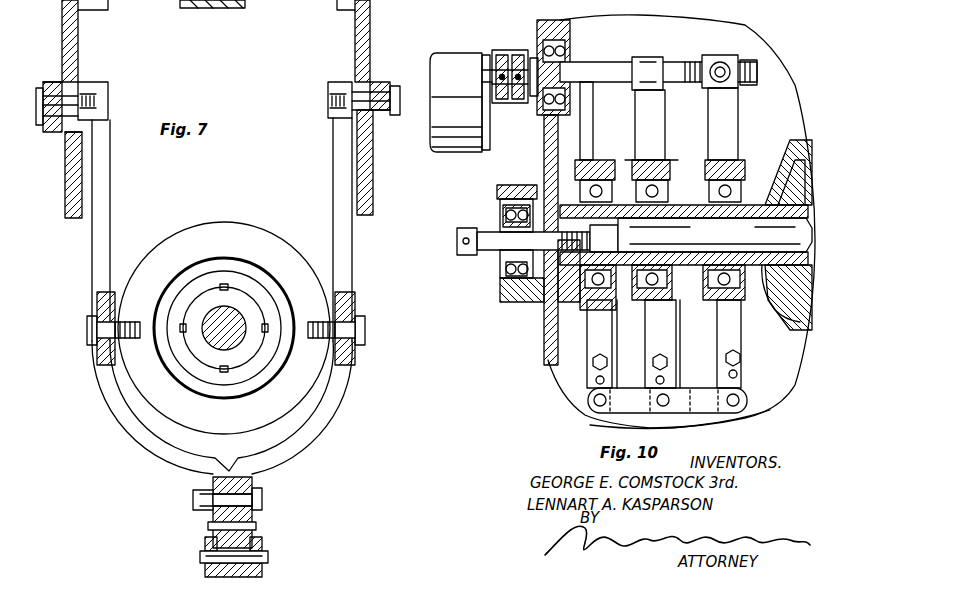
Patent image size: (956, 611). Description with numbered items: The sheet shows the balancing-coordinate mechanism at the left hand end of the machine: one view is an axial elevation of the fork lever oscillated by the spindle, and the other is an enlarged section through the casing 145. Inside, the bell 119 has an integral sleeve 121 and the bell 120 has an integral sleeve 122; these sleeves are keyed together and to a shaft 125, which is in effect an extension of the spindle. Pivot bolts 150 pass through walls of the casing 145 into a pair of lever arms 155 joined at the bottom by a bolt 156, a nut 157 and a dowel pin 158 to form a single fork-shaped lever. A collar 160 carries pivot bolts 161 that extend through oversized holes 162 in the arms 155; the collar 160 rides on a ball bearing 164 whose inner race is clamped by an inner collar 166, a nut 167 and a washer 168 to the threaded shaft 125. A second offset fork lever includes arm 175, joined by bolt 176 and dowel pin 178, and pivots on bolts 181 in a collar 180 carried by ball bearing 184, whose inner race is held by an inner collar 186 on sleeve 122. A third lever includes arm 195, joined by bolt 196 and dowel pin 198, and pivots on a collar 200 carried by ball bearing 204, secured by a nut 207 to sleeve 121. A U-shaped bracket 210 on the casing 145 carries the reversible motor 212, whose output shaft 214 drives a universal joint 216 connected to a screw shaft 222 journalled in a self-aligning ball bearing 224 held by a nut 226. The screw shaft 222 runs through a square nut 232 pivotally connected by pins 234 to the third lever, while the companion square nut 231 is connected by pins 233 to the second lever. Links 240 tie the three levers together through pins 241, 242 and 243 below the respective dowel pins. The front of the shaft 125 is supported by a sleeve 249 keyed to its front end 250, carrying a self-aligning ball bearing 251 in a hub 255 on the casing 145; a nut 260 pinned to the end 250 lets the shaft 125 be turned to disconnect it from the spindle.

In FIG. 10, the bell 119 is at (800, 332).
In FIG. 10, the bell 120 is at (800, 176).
In FIG. 10, the sleeve 121 is at (770, 302).
In FIG. 10, the sleeve 122 is at (711, 344).
In FIG. 7, the shaft 125 is at (232, 340).
In FIG. 10, the shaft 125 is at (644, 235).
In FIG. 7, the casing 145 is at (70, 178).
In FIG. 10, the casing 145 is at (710, 30).
In FIG. 7, the pivot bolts 150 is at (58, 95).
In FIG. 10, the pivot bolts 150 is at (588, 66).
In FIG. 7, the lever arms 155 is at (108, 210).
In FIG. 10, the lever arms 155 is at (556, 404).
In FIG. 7, the bolt 156 is at (262, 498).
In FIG. 10, the bolt 156 is at (600, 354).
In FIG. 7, the nut 157 is at (195, 500).
In FIG. 7, the dowel pin 158 is at (256, 527).
In FIG. 10, the dowel pin 158 is at (582, 402).
In FIG. 7, the collar 160 is at (216, 236).
In FIG. 10, the collar 160 is at (556, 346).
In FIG. 7, the pivot bolts 161 is at (100, 336).
In FIG. 7, the oversized holes 162 is at (96, 306).
In FIG. 10, the ball bearing 164 is at (546, 330).
In FIG. 10, the inner collar 166 is at (556, 300).
In FIG. 7, the nut 167 is at (245, 302).
In FIG. 10, the nut 167 is at (522, 292).
In FIG. 7, the washer 168 is at (193, 363).
In FIG. 10, the washer 168 is at (548, 200).
In FIG. 10, the lever arm 175 is at (648, 344).
In FIG. 10, the bolt 176 is at (653, 363).
In FIG. 10, the dowel pin 178 is at (656, 381).
In FIG. 10, the collar 180 is at (655, 170).
In FIG. 10, the pivot bolts 181 is at (662, 297).
In FIG. 10, the ball bearing 184 is at (633, 162).
In FIG. 10, the inner collar 186 is at (644, 200).
In FIG. 10, the lever arm 195 is at (726, 349).
In FIG. 10, the bolt 196 is at (741, 365).
In FIG. 10, the dowel pin 198 is at (741, 377).
In FIG. 10, the collar 200 is at (722, 150).
In FIG. 10, the ball bearing 204 is at (730, 170).
In FIG. 10, the nut 207 is at (708, 192).
In FIG. 10, the bracket 210 is at (490, 114).
In FIG. 10, the motor 212 is at (462, 130).
In FIG. 10, the output shaft 214 is at (482, 75).
In FIG. 10, the universal joint 216 is at (515, 52).
In FIG. 10, the screw shaft 222 is at (757, 70).
In FIG. 10, the self-aligning ball bearing 224 is at (560, 45).
In FIG. 10, the nut 226 is at (532, 100).
In FIG. 10, the nut 231 is at (660, 58).
In FIG. 10, the nut 232 is at (736, 58).
In FIG. 10, the pins 233 is at (656, 90).
In FIG. 10, the pins 234 is at (726, 78).
In FIG. 7, the links 240 is at (286, 540).
In FIG. 10, the links 240 is at (667, 400).
In FIG. 7, the pins 241 is at (268, 558).
In FIG. 10, the pins 241 is at (590, 418).
In FIG. 10, the pins 242 is at (672, 398).
In FIG. 10, the pins 243 is at (748, 405).
In FIG. 10, the sleeve 249 is at (500, 255).
In FIG. 10, the front end of shaft 250 is at (498, 232).
In FIG. 10, the self-aligning ball bearing 251 is at (502, 272).
In FIG. 10, the hub 255 is at (497, 192).
In FIG. 10, the nut 260 is at (457, 239).